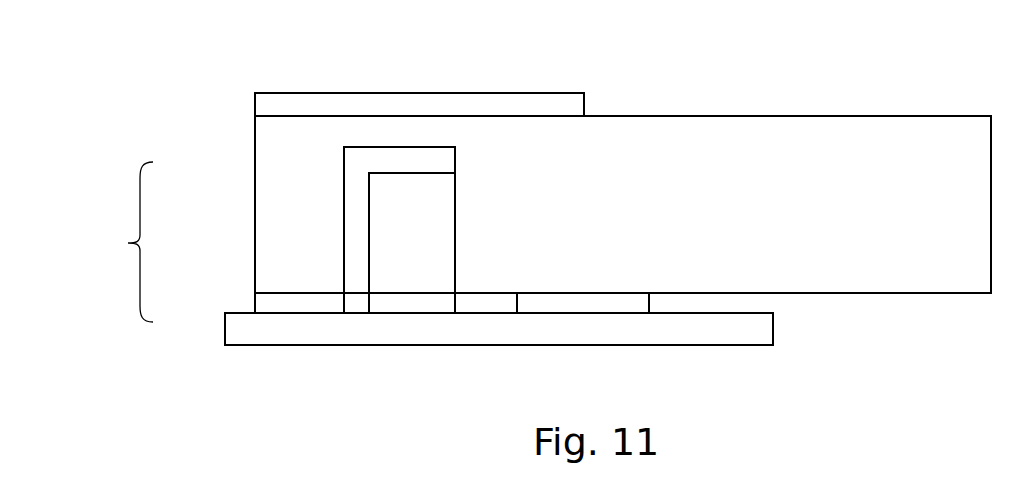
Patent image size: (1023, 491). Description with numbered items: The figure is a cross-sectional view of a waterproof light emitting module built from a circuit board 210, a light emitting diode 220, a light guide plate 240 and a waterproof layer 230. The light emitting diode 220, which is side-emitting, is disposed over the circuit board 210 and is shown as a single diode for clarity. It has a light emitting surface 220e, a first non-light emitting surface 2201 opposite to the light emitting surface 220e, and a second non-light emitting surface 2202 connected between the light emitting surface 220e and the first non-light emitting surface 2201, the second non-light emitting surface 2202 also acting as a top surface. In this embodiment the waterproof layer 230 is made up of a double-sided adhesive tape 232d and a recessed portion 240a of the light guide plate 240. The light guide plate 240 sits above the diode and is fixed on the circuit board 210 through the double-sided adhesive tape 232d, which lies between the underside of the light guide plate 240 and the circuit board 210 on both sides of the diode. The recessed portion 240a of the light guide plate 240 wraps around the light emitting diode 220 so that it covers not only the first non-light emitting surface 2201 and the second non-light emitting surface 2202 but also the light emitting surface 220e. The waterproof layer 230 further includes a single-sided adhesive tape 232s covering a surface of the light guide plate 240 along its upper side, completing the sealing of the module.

The circuit board 210 is at (737, 327).
The light emitting diode 220 is at (417, 215).
The first non-light emitting surface 2201 is at (366, 196).
The second non-light emitting surface 2202 is at (410, 168).
The light emitting surface 220e is at (458, 196).
The waterproof layer 230 is at (213, 219).
The single-sided adhesive tape 232s is at (265, 105).
The double-sided adhesive tape 232d is at (271, 305).
The light guide plate 240 is at (910, 283).
The recessed portion 240a is at (344, 190).